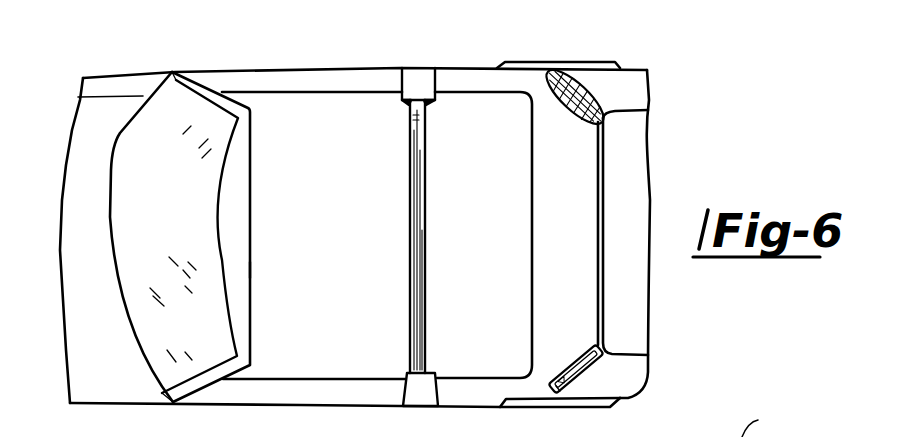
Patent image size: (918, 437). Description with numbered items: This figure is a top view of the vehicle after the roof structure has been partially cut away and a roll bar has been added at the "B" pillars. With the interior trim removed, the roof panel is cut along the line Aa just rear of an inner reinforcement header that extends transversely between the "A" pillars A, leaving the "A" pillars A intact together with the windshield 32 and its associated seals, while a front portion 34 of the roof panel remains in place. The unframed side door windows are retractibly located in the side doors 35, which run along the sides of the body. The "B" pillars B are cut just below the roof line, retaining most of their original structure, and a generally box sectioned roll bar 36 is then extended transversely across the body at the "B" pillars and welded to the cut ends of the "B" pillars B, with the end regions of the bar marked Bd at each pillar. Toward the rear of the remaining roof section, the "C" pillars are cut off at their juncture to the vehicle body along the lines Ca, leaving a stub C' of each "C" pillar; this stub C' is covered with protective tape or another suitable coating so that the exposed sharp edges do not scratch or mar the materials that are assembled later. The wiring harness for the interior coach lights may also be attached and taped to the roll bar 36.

The windshield 32 is at (173, 227).
The front portion of the roof panel 34 is at (237, 226).
The side doors 35 is at (396, 25).
The roll bar 36 is at (423, 220).
The "A" pillars A is at (198, 95).
The cut line Aa is at (252, 270).
The "B" pillars B is at (410, 392).
The bar end Bd is at (412, 106).
The stub of the "C" pillar C' is at (618, 210).
The cut lines Ca is at (566, 365).